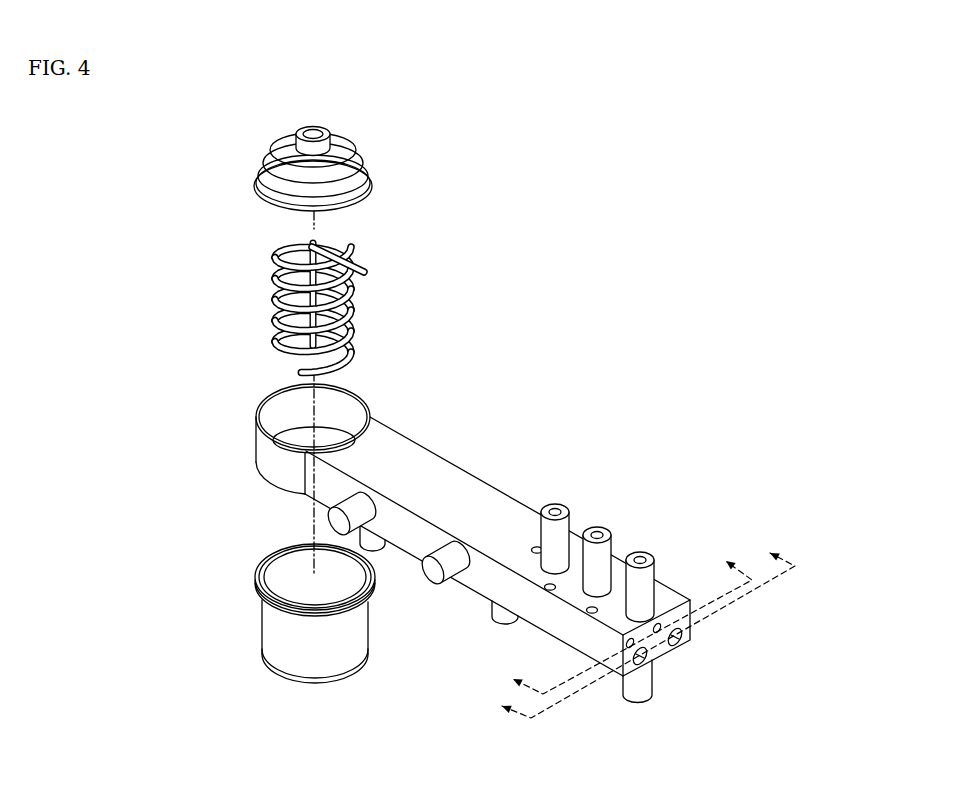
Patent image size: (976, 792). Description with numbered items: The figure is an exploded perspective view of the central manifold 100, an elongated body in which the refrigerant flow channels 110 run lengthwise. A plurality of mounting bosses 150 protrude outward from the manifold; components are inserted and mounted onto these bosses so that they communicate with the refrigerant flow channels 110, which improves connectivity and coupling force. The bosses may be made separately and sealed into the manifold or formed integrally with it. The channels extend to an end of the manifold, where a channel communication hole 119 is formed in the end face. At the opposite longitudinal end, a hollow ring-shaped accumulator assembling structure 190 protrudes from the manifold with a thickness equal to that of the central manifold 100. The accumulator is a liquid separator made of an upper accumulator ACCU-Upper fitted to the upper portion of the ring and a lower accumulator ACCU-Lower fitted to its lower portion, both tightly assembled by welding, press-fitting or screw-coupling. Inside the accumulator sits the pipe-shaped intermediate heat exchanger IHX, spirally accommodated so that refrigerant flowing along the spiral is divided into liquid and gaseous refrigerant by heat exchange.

The central manifold 100 is at (612, 158).
The refrigerant flow channels 110 is at (663, 628).
The channel communication hole 119 is at (729, 645).
The mounting bosses 150 is at (567, 505).
The accumulator assembling structure 190 is at (282, 460).
The intermediate heat exchanger IHX is at (278, 292).
The upper accumulator ACCU-Upper is at (257, 173).
The lower accumulator ACCU-Lower is at (280, 636).